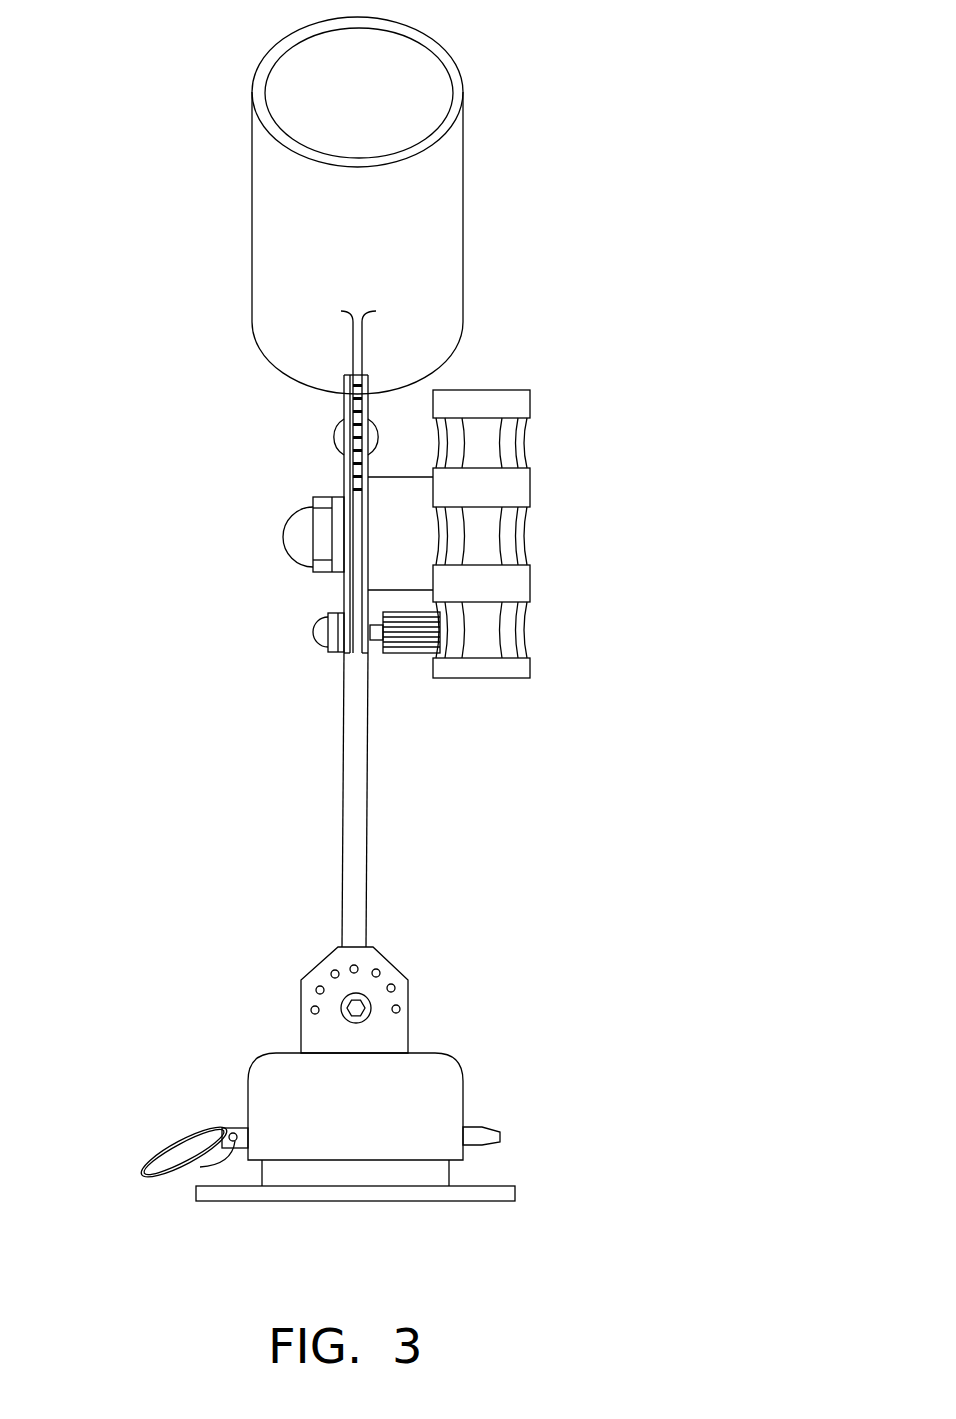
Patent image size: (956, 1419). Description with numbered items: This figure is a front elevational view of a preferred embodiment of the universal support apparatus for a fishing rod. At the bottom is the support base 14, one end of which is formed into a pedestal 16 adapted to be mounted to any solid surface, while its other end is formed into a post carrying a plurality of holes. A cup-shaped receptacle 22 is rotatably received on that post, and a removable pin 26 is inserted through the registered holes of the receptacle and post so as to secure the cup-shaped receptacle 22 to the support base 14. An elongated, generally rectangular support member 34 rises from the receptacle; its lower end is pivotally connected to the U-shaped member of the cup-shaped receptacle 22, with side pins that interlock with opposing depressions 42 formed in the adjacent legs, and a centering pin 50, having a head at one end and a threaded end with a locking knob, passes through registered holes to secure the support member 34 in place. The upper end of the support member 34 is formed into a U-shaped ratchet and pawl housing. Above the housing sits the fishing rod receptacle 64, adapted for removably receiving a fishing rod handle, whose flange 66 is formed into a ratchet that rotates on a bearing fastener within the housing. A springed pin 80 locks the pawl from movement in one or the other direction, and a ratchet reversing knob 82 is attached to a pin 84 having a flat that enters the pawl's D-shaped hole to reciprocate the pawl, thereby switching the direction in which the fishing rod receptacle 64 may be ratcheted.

The fishing rod receptacle 64 is at (438, 236).
The flange 66 is at (358, 340).
The support member 34 is at (366, 862).
The pin 84 is at (353, 547).
The springed pin 80 is at (373, 637).
The ratchet reversing knob 82 is at (513, 538).
The depressions 42 is at (377, 973).
The centering pin 50 is at (343, 1015).
The cup-shaped receptacle 22 is at (432, 1070).
The pedestal 16 is at (515, 1193).
The removable pin 26 is at (237, 1127).
The support base 14 is at (150, 1168).